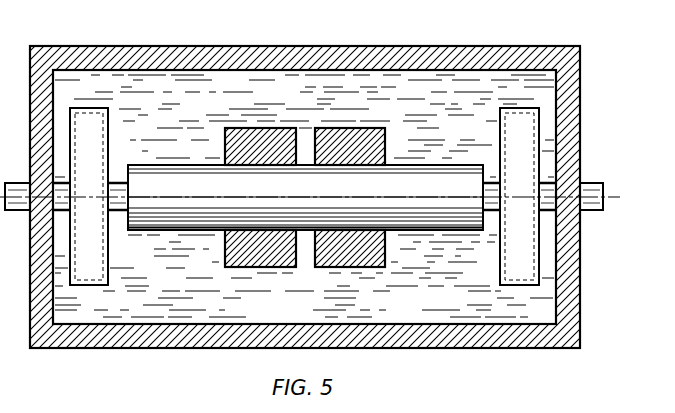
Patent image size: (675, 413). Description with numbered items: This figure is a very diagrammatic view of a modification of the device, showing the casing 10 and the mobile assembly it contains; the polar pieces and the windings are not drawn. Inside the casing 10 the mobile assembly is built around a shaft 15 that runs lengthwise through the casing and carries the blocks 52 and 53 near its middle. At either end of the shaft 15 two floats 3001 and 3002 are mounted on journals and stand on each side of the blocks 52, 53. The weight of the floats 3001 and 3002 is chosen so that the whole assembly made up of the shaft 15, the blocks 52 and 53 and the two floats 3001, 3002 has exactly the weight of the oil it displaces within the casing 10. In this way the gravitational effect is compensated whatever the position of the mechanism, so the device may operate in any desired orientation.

The casing 10 is at (298, 46).
The shaft 15 is at (494, 190).
The float 3001 is at (92, 286).
The float 3002 is at (515, 286).
The block 52 is at (263, 268).
The block 53 is at (349, 268).